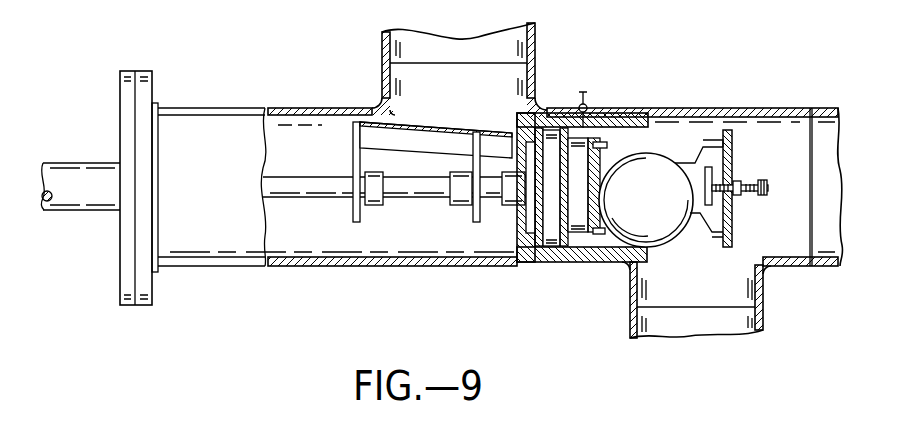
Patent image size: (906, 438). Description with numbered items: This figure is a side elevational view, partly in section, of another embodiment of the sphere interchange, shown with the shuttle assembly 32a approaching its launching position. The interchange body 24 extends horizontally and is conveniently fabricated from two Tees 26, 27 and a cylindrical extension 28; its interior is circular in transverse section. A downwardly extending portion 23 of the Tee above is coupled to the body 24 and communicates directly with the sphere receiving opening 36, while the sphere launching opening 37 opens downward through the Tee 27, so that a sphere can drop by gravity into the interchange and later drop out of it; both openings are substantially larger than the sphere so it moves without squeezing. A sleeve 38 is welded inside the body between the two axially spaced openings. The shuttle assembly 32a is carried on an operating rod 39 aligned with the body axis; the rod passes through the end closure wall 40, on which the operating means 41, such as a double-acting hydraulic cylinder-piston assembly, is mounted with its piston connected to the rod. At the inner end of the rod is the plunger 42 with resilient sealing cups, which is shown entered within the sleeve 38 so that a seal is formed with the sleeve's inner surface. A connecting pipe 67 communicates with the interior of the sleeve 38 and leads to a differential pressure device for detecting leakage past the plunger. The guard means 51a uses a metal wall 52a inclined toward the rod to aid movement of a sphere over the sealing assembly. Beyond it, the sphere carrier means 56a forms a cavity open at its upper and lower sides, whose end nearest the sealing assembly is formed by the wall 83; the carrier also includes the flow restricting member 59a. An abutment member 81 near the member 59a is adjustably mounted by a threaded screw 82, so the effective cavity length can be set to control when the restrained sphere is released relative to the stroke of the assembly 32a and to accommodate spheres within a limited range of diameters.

The downwardly extending portion 23 is at (533, 40).
The interchange body 24 is at (342, 266).
The Tee 26 is at (380, 103).
The Tee 27 is at (683, 110).
The extension 28 is at (830, 268).
The shuttle assembly 32a is at (465, 224).
The sphere receiving opening 36 is at (505, 89).
The sphere launching opening 37 is at (732, 289).
The sleeve 38 is at (598, 120).
The operating rod 39 is at (303, 186).
The end closure wall 40 is at (120, 116).
The operating means 41 is at (87, 211).
The plunger 42 is at (550, 226).
The guard means 51a is at (427, 163).
The metal wall 52a is at (434, 127).
The sphere carrier means 56a is at (663, 150).
The flow restricting member 59a is at (733, 158).
The connecting pipe 67 is at (584, 92).
The abutment member 81 is at (710, 205).
The threaded screw 82 is at (767, 187).
The wall 83 is at (592, 148).